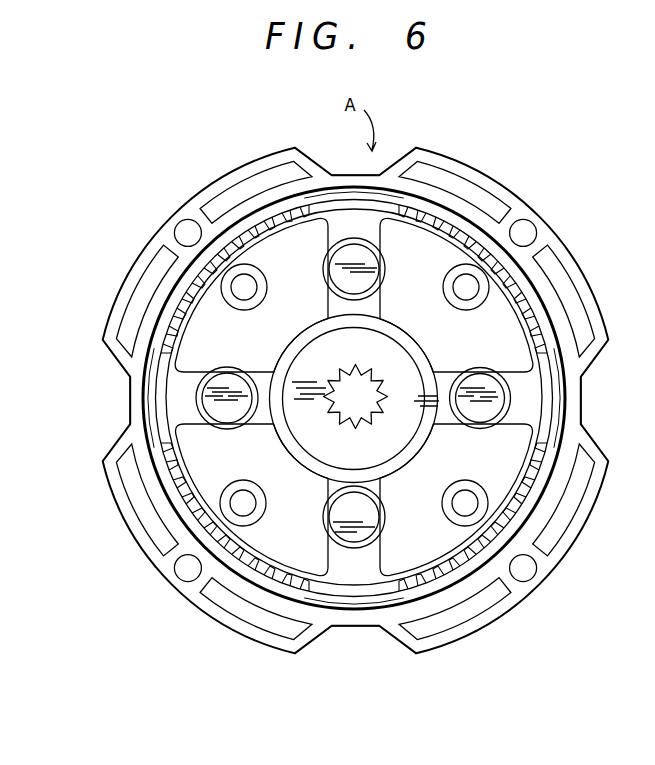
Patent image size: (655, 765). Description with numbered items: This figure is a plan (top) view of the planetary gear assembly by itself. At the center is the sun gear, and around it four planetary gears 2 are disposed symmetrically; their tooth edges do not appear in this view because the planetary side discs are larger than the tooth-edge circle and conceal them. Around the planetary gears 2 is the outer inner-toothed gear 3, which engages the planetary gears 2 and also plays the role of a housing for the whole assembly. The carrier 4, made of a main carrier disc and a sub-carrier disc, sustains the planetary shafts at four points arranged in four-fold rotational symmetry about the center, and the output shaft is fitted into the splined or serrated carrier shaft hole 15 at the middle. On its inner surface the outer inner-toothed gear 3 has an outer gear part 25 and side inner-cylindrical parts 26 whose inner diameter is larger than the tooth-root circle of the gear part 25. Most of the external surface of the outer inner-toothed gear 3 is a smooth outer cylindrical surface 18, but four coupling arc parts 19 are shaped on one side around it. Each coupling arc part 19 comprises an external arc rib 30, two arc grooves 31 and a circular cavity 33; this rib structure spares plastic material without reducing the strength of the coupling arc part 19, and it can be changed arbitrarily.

The planetary gear 2 is at (359, 397).
The outer inner-toothed gear 3 is at (318, 379).
The carrier 4 is at (282, 548).
The carrier shaft hole 15 is at (363, 427).
The smooth outer cylindrical surface 18 is at (127, 395).
The coupling arc part 19 is at (243, 160).
The outer gear part 25 is at (172, 293).
The side inner-cylindrical part 26 is at (180, 268).
The external arc rib 30 is at (305, 155).
The arc groove 31 is at (235, 195).
The circular cavity 33 is at (181, 225).